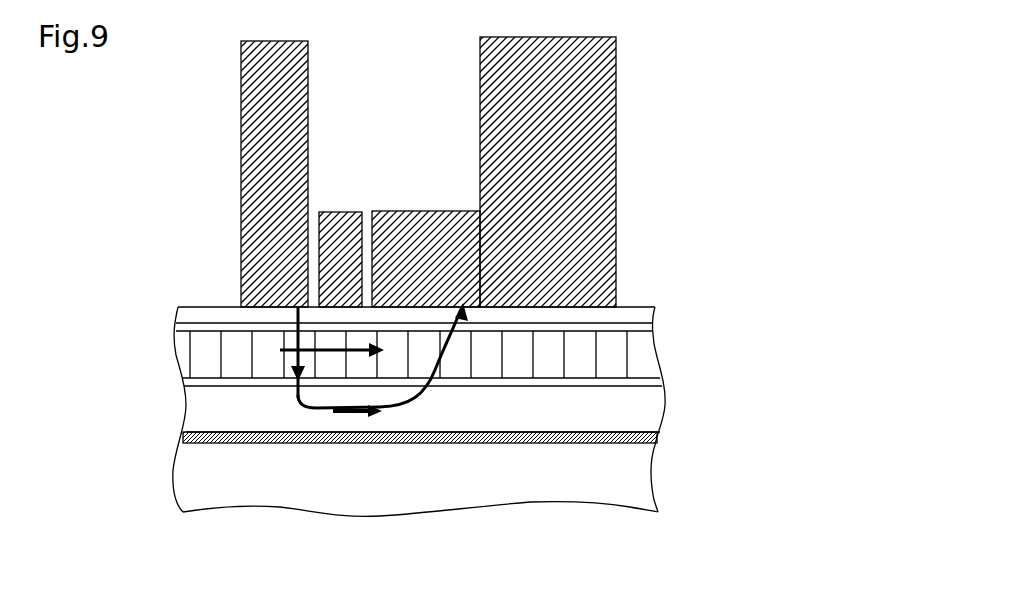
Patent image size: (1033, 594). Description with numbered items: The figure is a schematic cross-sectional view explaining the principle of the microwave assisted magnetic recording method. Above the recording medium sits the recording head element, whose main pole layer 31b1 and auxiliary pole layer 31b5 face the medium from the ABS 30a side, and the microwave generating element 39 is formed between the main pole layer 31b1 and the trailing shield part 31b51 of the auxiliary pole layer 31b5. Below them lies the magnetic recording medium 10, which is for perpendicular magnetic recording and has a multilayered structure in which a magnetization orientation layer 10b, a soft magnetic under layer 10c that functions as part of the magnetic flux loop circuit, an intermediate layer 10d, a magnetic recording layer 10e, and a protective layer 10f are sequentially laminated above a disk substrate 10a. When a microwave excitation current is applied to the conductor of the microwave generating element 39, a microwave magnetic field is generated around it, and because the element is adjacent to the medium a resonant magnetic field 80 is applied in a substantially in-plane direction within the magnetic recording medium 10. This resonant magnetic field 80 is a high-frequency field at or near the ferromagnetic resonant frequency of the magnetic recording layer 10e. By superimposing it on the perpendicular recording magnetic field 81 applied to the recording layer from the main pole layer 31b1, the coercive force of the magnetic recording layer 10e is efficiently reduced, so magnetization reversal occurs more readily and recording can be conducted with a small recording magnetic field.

The magnetic recording medium 10 is at (792, 307).
The disk substrate 10a is at (645, 475).
The magnetization orientation layer 10b is at (645, 439).
The soft magnetic under layer 10c is at (645, 412).
The intermediate layer 10d is at (645, 382).
The magnetic recording layer 10e is at (645, 357).
The protective layer 10f is at (645, 325).
The ABS 30a is at (522, 308).
The main pole layer 31b1 is at (257, 223).
The auxiliary pole layer 31b5 is at (597, 126).
The trailing shield part 31b51 is at (448, 246).
The microwave generating element 39 is at (340, 220).
The resonant magnetic field 80 is at (313, 350).
The perpendicular recording magnetic field 81 is at (300, 409).